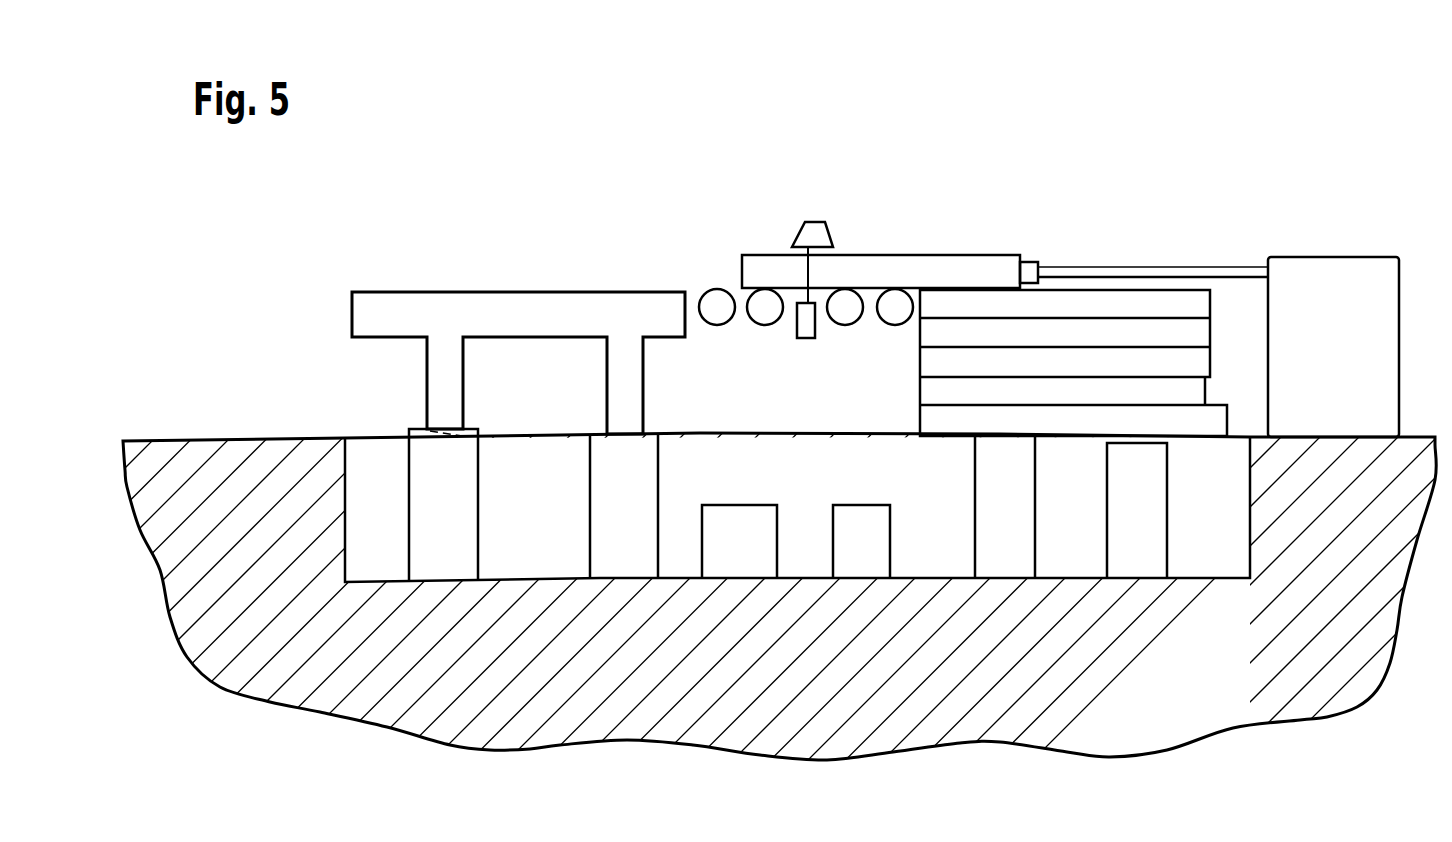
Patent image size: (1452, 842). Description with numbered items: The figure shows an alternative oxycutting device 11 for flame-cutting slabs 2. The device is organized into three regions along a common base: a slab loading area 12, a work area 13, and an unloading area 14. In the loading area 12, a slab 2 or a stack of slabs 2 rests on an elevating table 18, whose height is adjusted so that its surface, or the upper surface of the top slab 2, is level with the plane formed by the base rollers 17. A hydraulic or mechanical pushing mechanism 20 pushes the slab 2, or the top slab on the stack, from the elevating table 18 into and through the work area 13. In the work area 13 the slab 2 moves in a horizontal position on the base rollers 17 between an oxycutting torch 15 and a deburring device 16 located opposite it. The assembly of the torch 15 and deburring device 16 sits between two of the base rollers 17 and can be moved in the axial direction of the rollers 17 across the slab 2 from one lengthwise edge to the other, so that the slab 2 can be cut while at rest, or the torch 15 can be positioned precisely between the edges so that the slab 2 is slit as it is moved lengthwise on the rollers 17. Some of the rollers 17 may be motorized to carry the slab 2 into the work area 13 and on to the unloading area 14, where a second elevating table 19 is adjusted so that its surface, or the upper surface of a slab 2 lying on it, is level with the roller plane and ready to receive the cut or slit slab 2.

The sensor device 11 is at (1040, 87).
The slab loading area 12 is at (1172, 194).
The work area 13 is at (810, 194).
The unloading area 14 is at (562, 197).
The oxycutting torch 15 is at (820, 233).
The deburring device 16 is at (822, 330).
The base rollers 17 is at (765, 305).
The elevating table 18 is at (1073, 420).
The elevating table 19 is at (473, 313).
The slab 2 is at (970, 262).
The pushing mechanism 20 is at (1268, 270).